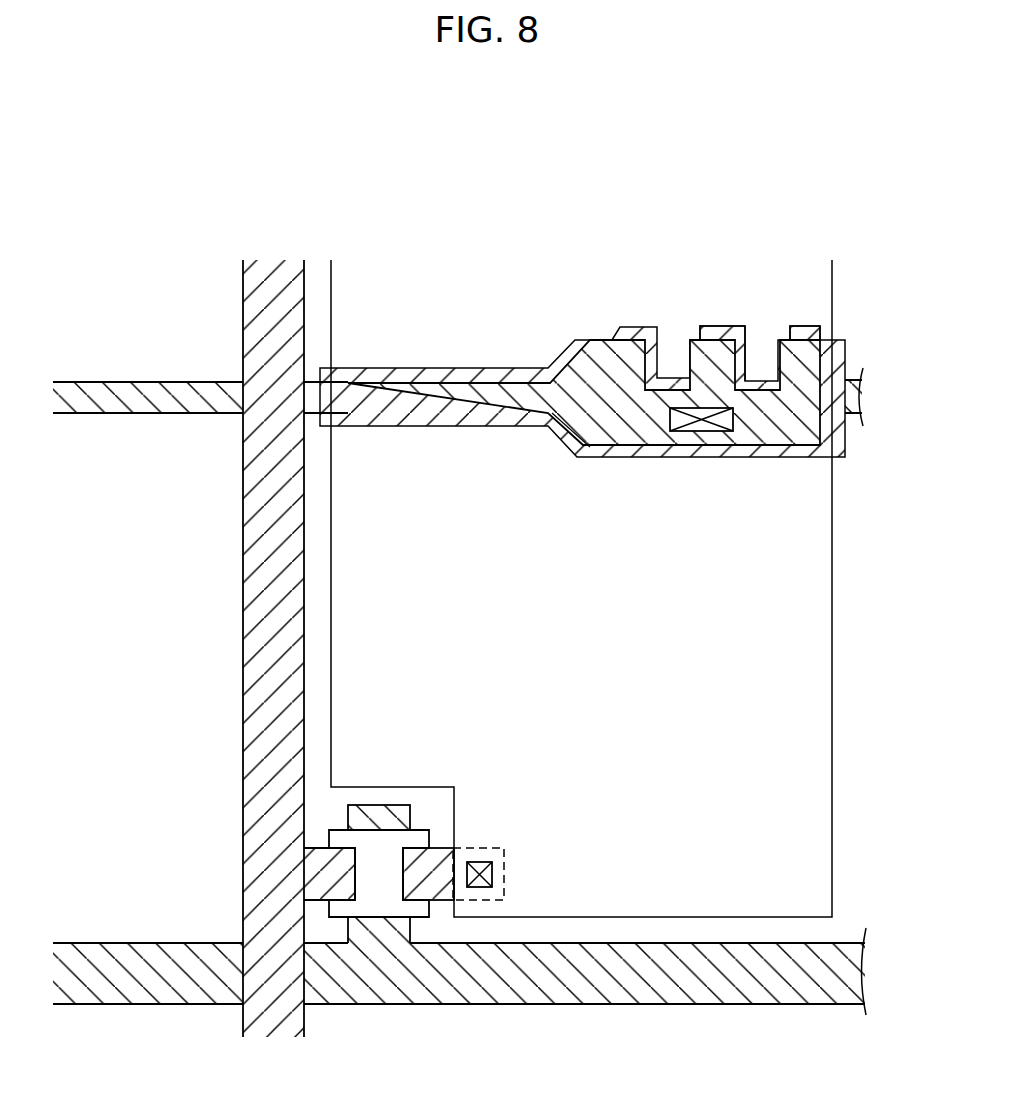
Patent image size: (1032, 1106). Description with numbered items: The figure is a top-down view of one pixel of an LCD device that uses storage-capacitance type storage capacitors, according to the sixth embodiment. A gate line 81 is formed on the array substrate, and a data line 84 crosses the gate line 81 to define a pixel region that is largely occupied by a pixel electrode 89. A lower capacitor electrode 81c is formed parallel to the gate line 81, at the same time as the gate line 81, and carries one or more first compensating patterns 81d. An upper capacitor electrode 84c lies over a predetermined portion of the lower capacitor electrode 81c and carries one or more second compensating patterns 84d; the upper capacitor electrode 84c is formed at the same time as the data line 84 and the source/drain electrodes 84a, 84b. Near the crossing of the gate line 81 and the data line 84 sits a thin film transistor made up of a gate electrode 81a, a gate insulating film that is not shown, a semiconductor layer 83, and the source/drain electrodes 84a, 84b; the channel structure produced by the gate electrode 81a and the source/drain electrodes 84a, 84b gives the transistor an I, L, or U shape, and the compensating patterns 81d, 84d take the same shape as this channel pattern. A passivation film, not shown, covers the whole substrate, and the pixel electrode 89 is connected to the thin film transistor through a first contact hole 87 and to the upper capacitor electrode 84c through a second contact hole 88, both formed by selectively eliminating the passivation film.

The gate line 81 is at (718, 987).
The gate electrode 81a is at (394, 805).
The lower capacitor electrode 81c is at (488, 372).
The first compensating pattern 81d is at (771, 340).
The semiconductor layer 83 is at (386, 904).
The data line 84 is at (243, 767).
The source/drain electrode 84a is at (318, 874).
The source/drain electrode 84b is at (443, 858).
The upper capacitor electrode 84c is at (621, 327).
The second compensating pattern 84d is at (658, 328).
The first contact hole 87 is at (505, 876).
The second contact hole 88 is at (712, 431).
The pixel electrode 89 is at (822, 806).